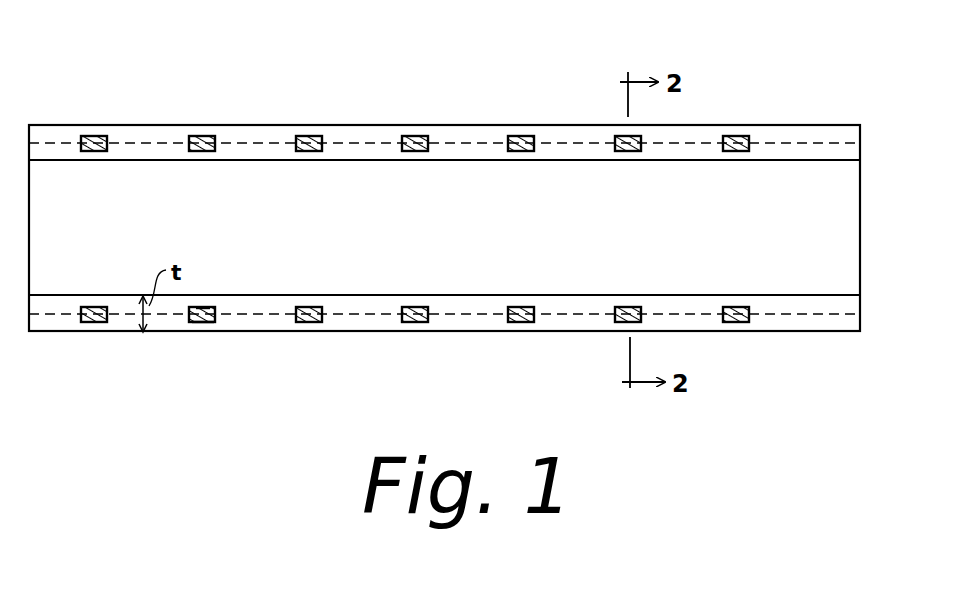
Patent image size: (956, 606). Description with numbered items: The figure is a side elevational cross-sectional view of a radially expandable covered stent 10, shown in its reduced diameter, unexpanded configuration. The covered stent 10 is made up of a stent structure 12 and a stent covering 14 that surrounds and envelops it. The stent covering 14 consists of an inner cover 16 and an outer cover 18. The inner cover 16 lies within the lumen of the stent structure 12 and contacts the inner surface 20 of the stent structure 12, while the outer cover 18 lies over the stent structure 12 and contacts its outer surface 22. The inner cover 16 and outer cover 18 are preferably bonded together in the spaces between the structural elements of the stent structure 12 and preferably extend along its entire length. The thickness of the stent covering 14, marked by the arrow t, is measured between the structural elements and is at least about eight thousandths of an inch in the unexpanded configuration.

The covered stent 10 is at (142, 50).
The stent structure 12 is at (199, 326).
The stent covering 14 is at (177, 133).
The inner cover 16 is at (370, 305).
The outer cover 18 is at (358, 321).
The inner surface 20 is at (205, 308).
The outer surface 22 is at (206, 326).